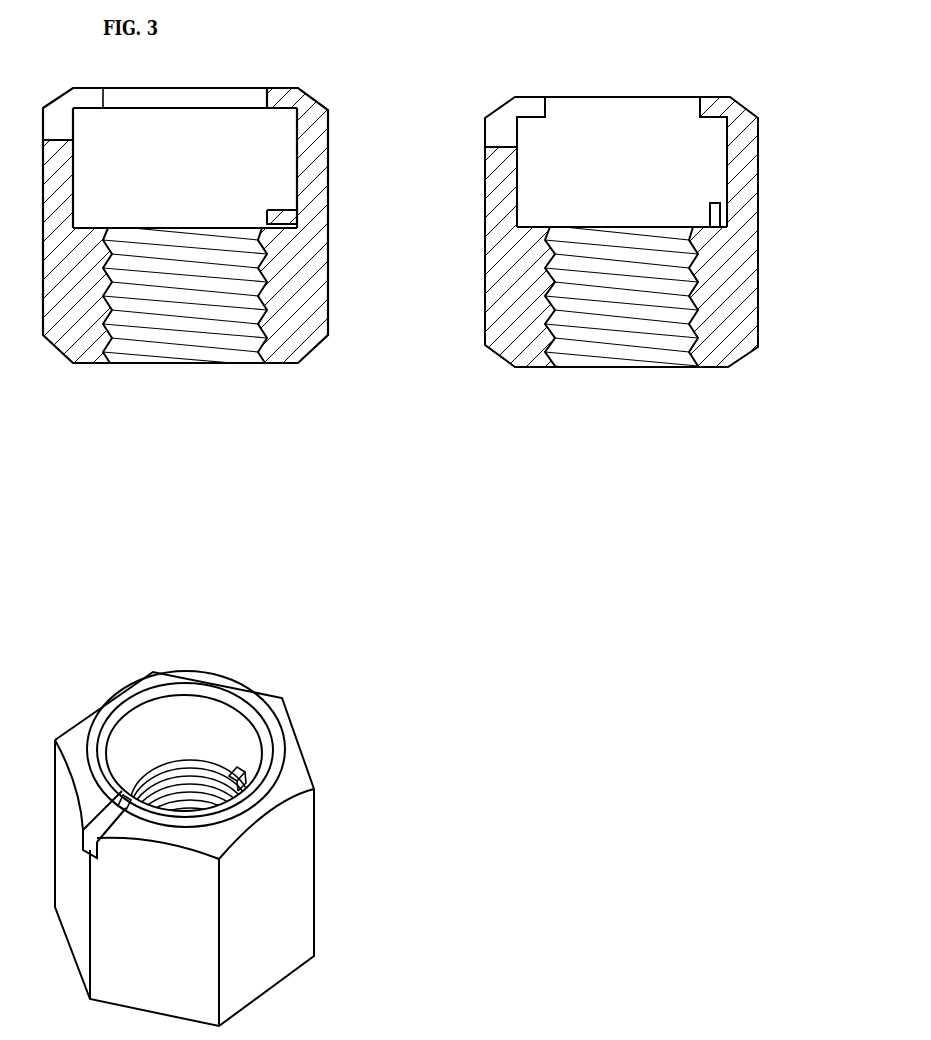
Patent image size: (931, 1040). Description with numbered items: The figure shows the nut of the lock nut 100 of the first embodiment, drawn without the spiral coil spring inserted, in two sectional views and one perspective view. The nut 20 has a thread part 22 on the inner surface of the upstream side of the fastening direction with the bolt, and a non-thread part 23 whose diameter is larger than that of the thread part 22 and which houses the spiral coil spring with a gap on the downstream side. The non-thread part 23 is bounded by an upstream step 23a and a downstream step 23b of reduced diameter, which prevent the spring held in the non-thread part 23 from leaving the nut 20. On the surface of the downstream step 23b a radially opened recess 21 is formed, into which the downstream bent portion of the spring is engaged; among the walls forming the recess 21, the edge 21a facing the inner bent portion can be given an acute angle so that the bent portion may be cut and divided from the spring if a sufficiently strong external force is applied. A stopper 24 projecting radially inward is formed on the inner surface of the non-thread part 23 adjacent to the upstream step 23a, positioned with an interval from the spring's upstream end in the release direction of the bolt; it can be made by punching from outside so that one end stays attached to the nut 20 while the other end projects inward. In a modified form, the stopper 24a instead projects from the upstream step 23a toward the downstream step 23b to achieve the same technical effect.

The lock nut 100 is at (374, 129).
The nut 20 is at (328, 270).
The recess 21 is at (83, 831).
The edge 21a is at (124, 795).
The thread part 22 is at (262, 328).
The non-thread part 23 is at (297, 140).
The upstream step 23a is at (109, 228).
The downstream step 23b is at (92, 108).
The stopper 24 is at (267, 210).
The stopper 24a is at (714, 200).